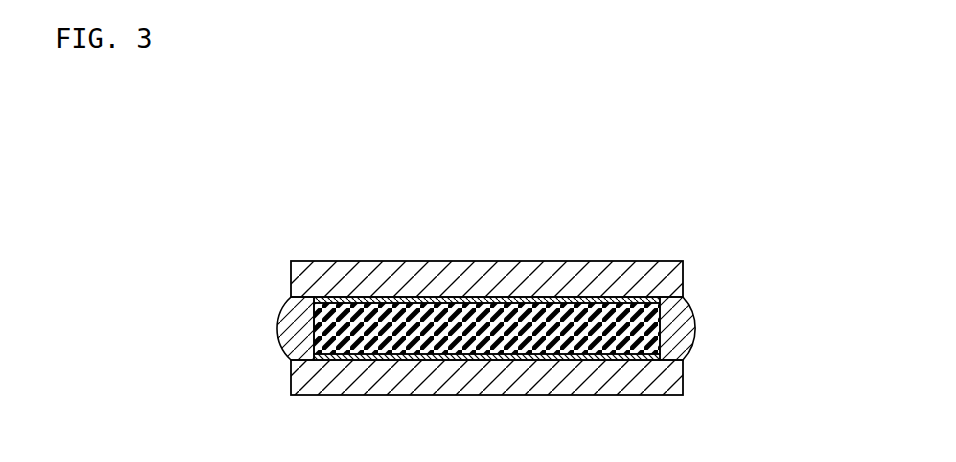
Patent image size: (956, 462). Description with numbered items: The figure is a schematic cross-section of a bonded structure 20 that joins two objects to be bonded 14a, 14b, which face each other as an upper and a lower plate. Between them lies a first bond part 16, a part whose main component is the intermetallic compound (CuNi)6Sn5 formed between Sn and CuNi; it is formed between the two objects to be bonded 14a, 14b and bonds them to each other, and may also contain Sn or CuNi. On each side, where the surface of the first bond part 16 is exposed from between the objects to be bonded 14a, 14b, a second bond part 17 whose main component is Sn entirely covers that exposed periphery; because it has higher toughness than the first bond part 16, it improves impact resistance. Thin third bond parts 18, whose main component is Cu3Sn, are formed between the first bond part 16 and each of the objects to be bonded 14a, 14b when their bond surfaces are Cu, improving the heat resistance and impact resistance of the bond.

The bonded structure 20 is at (274, 213).
The object to be bonded 14a is at (672, 282).
The object to be bonded 14b is at (670, 378).
The first bond part 16 is at (640, 332).
The second bond part 17 is at (678, 318).
The third bond part 18 is at (316, 301).